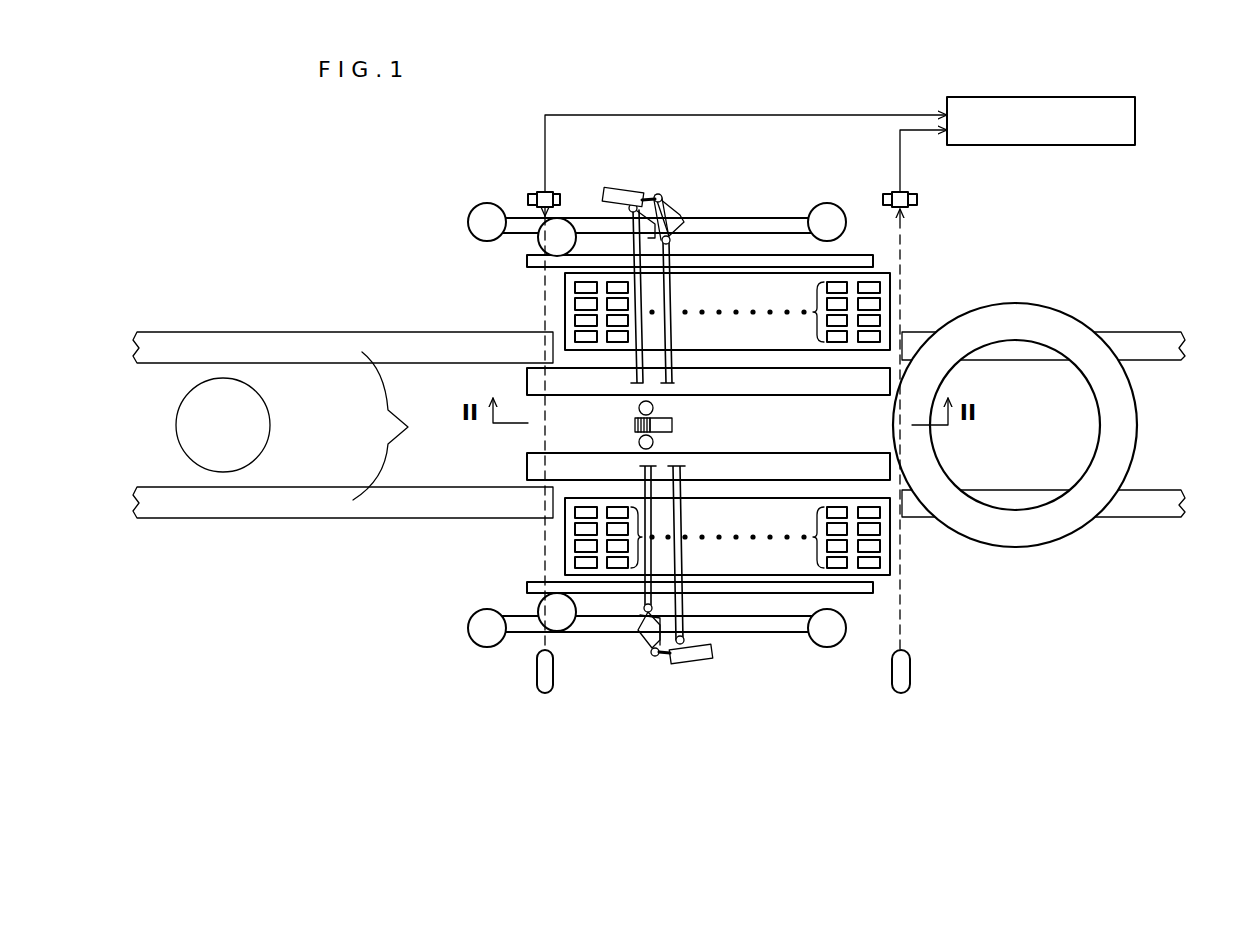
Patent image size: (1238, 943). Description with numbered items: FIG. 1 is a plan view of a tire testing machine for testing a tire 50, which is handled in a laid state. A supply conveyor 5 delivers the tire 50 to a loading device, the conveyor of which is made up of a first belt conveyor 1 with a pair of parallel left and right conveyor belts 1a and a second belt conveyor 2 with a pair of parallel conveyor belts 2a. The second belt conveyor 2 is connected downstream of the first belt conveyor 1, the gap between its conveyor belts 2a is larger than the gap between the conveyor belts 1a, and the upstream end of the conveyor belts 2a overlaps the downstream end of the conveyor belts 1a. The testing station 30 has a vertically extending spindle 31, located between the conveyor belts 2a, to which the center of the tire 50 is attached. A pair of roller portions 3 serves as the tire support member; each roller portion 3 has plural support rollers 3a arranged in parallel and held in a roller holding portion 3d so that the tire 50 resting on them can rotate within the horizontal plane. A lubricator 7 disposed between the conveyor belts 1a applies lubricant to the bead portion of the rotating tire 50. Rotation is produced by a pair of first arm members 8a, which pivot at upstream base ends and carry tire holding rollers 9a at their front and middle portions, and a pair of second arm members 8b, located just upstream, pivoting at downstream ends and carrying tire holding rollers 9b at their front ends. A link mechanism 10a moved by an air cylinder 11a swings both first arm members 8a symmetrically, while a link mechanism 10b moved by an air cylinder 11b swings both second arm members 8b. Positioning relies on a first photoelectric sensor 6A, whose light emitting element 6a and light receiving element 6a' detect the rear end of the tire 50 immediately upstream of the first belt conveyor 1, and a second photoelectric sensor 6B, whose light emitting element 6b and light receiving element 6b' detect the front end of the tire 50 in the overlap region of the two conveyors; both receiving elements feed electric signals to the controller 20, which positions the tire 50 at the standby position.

The first belt conveyor 1 is at (708, 424).
The conveyor belts 1a is at (818, 388).
The second belt conveyor 2 is at (292, 320).
The conveyor belts 2a is at (398, 426).
The roller portion 3 is at (724, 429).
The support rollers 3a is at (838, 282).
The roller holding portion 3d is at (565, 305).
The supply conveyor 5 is at (1143, 340).
The first photoelectric sensor 6A is at (945, 685).
The second photoelectric sensor 6B is at (498, 700).
The light emitting element 6a is at (899, 700).
The light emitting element 6b is at (545, 700).
The light receiving element 6a' is at (931, 179).
The light receiving element 6b' is at (717, 165).
The lubricator 7 is at (630, 426).
The first arm members 8a is at (588, 218).
The second arm members 8b is at (777, 218).
The tire holding rollers 9a is at (550, 240).
The tire holding rollers 9b is at (830, 208).
The link mechanism 10a is at (645, 648).
The link mechanism 10b is at (672, 198).
The air cylinder 11a is at (693, 660).
The air cylinder 11b is at (622, 187).
The controller 20 is at (1031, 97).
The testing station 30 is at (343, 373).
The spindle 31 is at (262, 440).
The tire 50 is at (1062, 298).